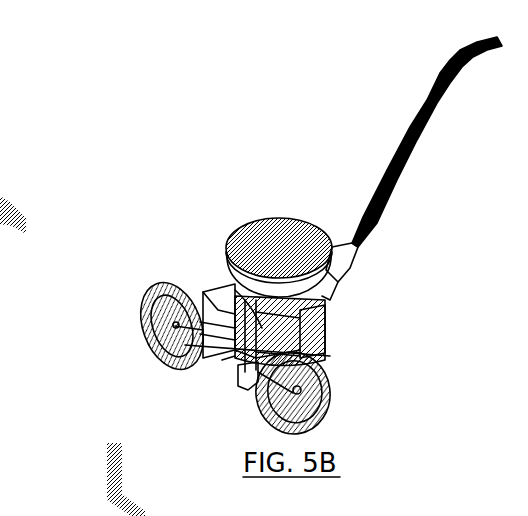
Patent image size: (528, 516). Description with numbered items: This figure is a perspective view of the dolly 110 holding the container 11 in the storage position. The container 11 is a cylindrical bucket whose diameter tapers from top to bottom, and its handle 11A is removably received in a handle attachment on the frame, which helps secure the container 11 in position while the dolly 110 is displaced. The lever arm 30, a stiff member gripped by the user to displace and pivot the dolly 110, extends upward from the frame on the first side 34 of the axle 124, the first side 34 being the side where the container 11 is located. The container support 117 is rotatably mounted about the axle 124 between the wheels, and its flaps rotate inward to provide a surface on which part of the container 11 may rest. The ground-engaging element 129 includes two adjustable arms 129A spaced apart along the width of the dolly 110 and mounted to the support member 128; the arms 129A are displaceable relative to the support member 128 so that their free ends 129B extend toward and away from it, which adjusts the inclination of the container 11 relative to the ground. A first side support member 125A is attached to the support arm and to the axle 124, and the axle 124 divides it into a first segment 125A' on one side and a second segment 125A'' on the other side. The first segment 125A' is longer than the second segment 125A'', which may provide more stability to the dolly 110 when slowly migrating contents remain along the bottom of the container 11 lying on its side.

The dolly 110 is at (338, 153).
The container 11 is at (254, 222).
The handle 11A is at (340, 264).
The lever arm 30 is at (412, 149).
The first side 34 is at (360, 334).
The container support 117 is at (222, 379).
The axle 124 is at (200, 340).
The first side support member 125A is at (221, 363).
The first segment 125A' is at (201, 251).
The second segment 125A'' is at (226, 405).
The support member 128 is at (208, 271).
The ground-engaging element 129 is at (168, 268).
The adjustable arms 129A is at (170, 290).
The free ends 129B is at (165, 293).